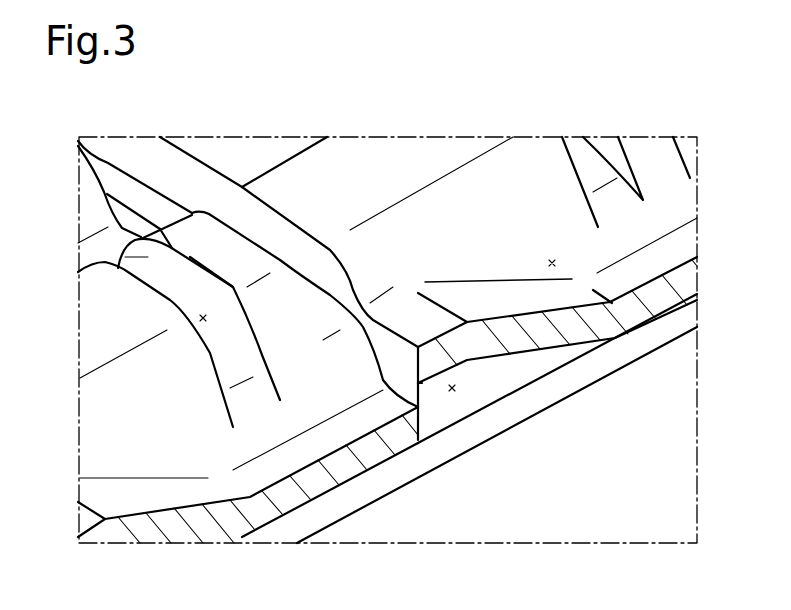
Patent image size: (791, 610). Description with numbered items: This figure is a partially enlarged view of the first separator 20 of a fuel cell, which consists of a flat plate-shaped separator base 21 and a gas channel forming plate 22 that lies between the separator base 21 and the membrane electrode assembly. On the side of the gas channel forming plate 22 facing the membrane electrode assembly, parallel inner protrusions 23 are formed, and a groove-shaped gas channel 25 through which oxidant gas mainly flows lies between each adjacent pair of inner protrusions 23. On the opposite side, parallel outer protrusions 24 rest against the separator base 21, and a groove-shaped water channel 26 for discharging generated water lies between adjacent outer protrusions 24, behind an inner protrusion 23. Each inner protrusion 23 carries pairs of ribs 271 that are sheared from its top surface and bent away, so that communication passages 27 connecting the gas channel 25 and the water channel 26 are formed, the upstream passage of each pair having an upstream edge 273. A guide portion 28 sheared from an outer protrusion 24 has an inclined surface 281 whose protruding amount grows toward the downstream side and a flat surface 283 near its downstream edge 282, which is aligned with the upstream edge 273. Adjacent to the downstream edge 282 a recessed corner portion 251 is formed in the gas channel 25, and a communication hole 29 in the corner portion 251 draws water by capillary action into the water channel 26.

The first separator 20 is at (557, 355).
The flat separator base 21 is at (630, 360).
The gas channel forming plate 22 is at (668, 335).
The inner protrusion 23 is at (372, 170).
The outer protrusion 24 is at (367, 472).
The gas channel 25 is at (552, 262).
The corner portion 251 is at (401, 403).
The water channel 26 is at (200, 320).
The communication passage 27 is at (122, 257).
The rib 271 is at (307, 300).
The upstream edge 273 is at (238, 208).
The guide portion 28 is at (523, 352).
The inclined surface 281 is at (494, 300).
The downstream edge 282 is at (397, 350).
The flat surface 283 is at (407, 318).
The communication hole 29 is at (418, 388).